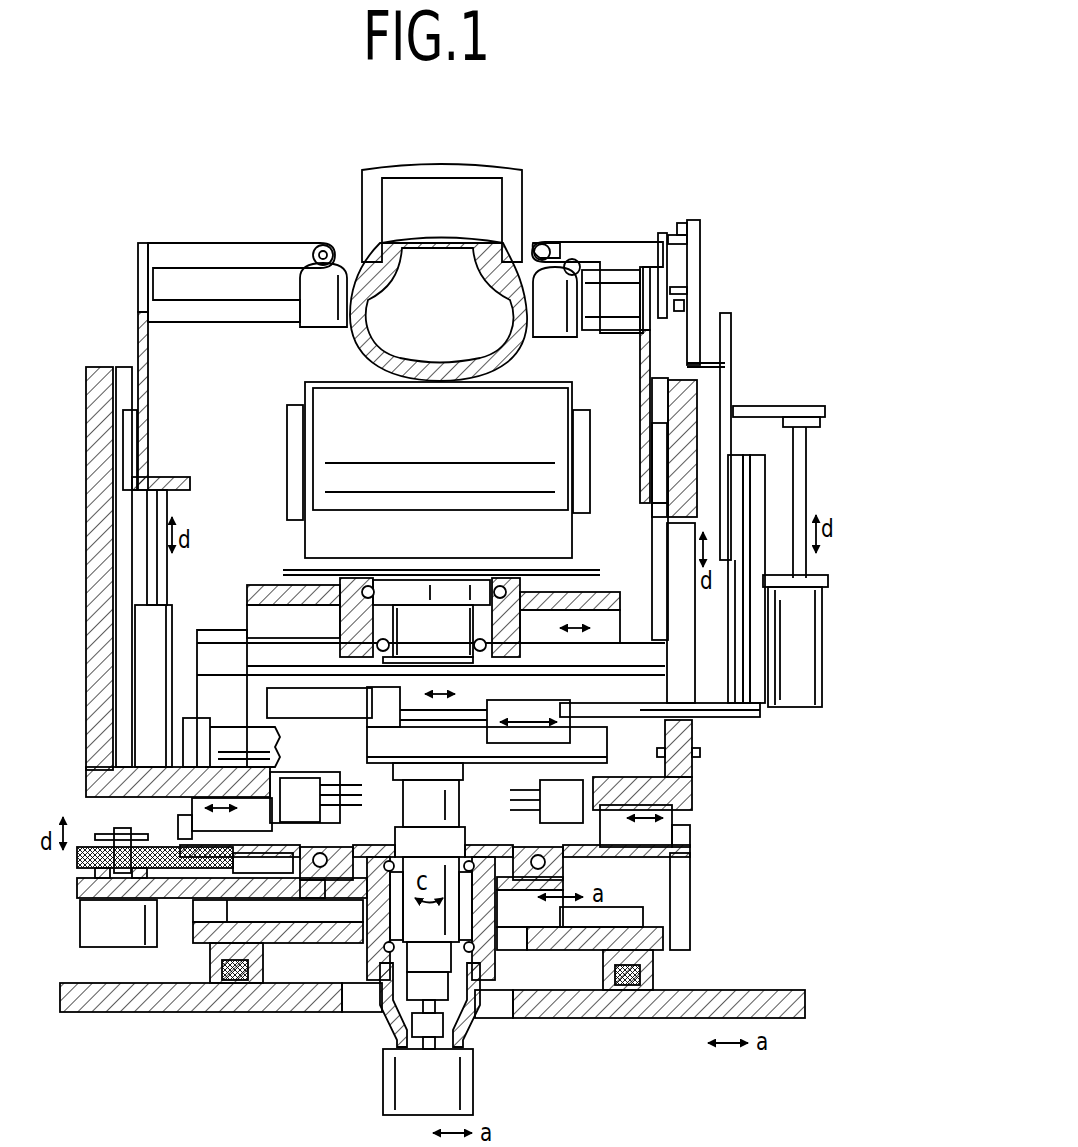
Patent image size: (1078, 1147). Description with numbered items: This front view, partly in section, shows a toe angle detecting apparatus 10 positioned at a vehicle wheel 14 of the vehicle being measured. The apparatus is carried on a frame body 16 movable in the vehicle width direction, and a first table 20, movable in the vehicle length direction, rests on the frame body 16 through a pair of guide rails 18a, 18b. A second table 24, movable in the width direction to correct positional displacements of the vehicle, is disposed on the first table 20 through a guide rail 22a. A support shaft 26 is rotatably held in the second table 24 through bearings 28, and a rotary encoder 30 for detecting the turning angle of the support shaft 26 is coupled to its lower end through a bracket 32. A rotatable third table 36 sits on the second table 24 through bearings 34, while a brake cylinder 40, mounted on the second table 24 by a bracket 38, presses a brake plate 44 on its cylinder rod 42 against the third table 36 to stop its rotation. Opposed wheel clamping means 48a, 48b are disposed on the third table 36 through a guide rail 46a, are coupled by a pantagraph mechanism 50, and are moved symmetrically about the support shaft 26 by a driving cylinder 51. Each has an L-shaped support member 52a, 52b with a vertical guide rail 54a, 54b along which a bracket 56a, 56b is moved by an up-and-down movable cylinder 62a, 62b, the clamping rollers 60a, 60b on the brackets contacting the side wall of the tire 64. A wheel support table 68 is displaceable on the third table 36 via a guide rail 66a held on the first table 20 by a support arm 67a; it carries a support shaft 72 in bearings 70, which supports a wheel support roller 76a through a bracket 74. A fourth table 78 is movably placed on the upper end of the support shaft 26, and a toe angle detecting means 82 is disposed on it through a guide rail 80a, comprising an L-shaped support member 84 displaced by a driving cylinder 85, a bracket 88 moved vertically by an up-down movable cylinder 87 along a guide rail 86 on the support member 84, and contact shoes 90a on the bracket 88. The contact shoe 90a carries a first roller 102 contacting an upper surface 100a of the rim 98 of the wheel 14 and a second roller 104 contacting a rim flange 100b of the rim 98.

The toe angle detecting apparatus 10 is at (758, 218).
The vehicle wheel 14 is at (503, 166).
The frame body 16 is at (115, 1000).
The guide rail 18a is at (233, 975).
The guide rail 18b is at (653, 972).
The first table 20 is at (663, 940).
The guide rail 22a is at (633, 918).
The second table 24 is at (605, 873).
The support shaft 26 is at (432, 985).
The bearings 28 is at (490, 953).
The rotary encoder 30 is at (447, 1090).
The bracket 32 is at (383, 1027).
The bearings 34 is at (310, 883).
The third table 36 is at (690, 853).
The bracket 38 is at (180, 890).
The brake cylinder 40 is at (95, 918).
The cylinder rod 42 is at (115, 830).
The brake plate 44 is at (77, 857).
The guide rail 46a is at (680, 835).
The wheel clamping means 48a is at (88, 513).
The wheel clamping means 48b is at (700, 407).
The pantagraph mechanism 50 is at (513, 790).
The driving cylinder 51 is at (237, 740).
The support member 52a is at (100, 440).
The support member 52b is at (790, 590).
The guide rail 54a is at (128, 500).
The guide rail 54b is at (657, 500).
The bracket 56a is at (138, 330).
The bracket 56b is at (640, 440).
The clamping roller 60a is at (310, 295).
The clamping roller 60b is at (560, 300).
The up-and-down movable cylinder 62a is at (150, 662).
The up-and-down movable cylinder 62b is at (697, 647).
The tire 64 is at (415, 357).
The guide rail 66a is at (237, 637).
The support arm 67a is at (213, 690).
The wheel support table 68 is at (612, 598).
The bearings 70 is at (510, 608).
The support shaft 72 is at (450, 588).
The bracket 74 is at (287, 430).
The wheel support roller 76a is at (378, 478).
The fourth table 78 is at (640, 800).
The guide rail 80a is at (602, 745).
The toe angle detecting means 82 is at (818, 398).
The support member 84 is at (760, 712).
The driving cylinder 85 is at (345, 712).
The guide rail 86 is at (740, 570).
The up-down movable cylinder 87 is at (800, 665).
The bracket 88 is at (695, 275).
The contact shoe 90a is at (668, 221).
The rim 98 is at (405, 185).
The upper surface 100a is at (445, 248).
The rim flange 100b is at (500, 250).
The first roller 102 is at (550, 243).
The second roller 104 is at (585, 265).